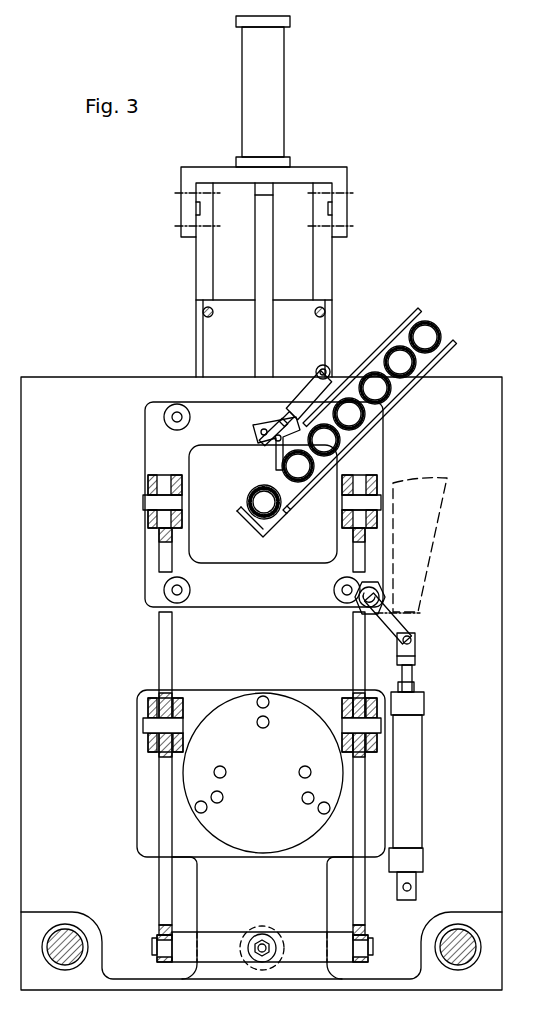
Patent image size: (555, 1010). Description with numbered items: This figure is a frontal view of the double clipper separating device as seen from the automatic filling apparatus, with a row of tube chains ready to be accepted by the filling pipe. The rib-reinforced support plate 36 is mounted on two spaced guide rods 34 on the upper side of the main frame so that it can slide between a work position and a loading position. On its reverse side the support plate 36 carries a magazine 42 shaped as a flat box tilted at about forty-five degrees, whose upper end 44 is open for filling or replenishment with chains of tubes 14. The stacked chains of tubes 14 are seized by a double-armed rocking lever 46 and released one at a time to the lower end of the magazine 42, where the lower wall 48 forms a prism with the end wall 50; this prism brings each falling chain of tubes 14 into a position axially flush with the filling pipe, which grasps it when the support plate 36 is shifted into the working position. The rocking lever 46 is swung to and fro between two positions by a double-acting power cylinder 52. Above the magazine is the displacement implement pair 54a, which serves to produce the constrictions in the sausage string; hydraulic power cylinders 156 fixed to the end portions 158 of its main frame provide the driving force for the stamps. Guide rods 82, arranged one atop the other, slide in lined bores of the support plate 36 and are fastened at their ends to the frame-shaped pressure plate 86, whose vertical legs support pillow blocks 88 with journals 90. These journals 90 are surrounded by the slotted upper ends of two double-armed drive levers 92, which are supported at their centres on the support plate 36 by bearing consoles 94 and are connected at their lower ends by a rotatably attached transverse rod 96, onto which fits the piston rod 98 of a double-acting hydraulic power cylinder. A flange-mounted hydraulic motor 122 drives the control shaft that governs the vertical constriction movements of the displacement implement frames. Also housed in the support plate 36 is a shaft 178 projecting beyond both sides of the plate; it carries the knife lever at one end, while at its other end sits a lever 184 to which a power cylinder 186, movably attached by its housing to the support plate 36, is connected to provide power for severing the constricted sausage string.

The hollow rod / chain of tubes 14 is at (253, 491).
The guide rods 34 is at (65, 938).
The support plate 36 is at (87, 677).
The magazine 42 is at (405, 318).
The upper end of the magazine 44 is at (428, 322).
The double-armed rocking lever 46 is at (272, 463).
The lower wall 48 is at (286, 513).
The end wall 50 is at (241, 523).
The double-acting power cylinder 52 is at (296, 386).
The displacement implement pair 54a is at (194, 279).
The guide rods 82 is at (177, 404).
The pressure plate 86 is at (155, 433).
The pillow blocks 88 is at (148, 485).
The journals 90 is at (155, 508).
The double-armed drive levers 92 is at (167, 643).
The bearing consoles 94 is at (147, 748).
The transverse rod 96 is at (218, 938).
The piston rod 98 is at (262, 944).
The hydraulic motor 122 is at (290, 706).
The hydraulic power cylinders 156 is at (278, 76).
The end portions 158 is at (343, 207).
The shaft 178 is at (378, 598).
The lever 184 is at (407, 633).
The power cylinder 186 is at (408, 778).